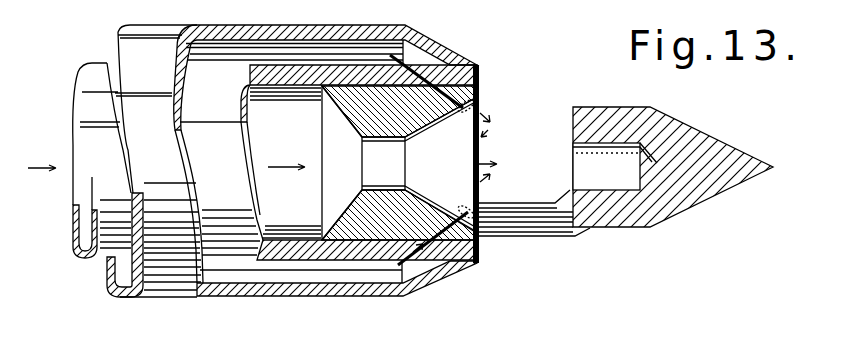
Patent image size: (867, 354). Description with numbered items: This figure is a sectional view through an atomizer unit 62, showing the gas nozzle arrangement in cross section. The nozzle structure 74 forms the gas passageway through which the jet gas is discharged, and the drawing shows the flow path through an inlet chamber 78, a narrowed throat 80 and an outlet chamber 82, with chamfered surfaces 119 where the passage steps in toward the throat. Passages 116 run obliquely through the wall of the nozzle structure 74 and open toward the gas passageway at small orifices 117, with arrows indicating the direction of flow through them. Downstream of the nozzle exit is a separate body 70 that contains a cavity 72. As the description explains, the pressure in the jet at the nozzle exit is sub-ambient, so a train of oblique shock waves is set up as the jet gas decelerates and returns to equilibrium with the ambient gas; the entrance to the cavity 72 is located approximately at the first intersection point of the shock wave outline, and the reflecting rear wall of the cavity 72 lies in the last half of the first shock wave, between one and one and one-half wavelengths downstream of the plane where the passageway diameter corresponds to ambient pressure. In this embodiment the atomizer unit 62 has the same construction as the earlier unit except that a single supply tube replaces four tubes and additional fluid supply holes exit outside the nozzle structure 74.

The atomizer unit 62 is at (141, 297).
The nozzle body 70 is at (708, 132).
The cavity 72 is at (618, 178).
The nozzle structure 74 is at (322, 102).
The inlet chamber 78 is at (356, 168).
The throat 80 is at (395, 168).
The outlet chamber 82 is at (435, 168).
The passages 116 is at (487, 98).
The orifices 117 is at (474, 111).
The chamfered surfaces 119 is at (340, 127).